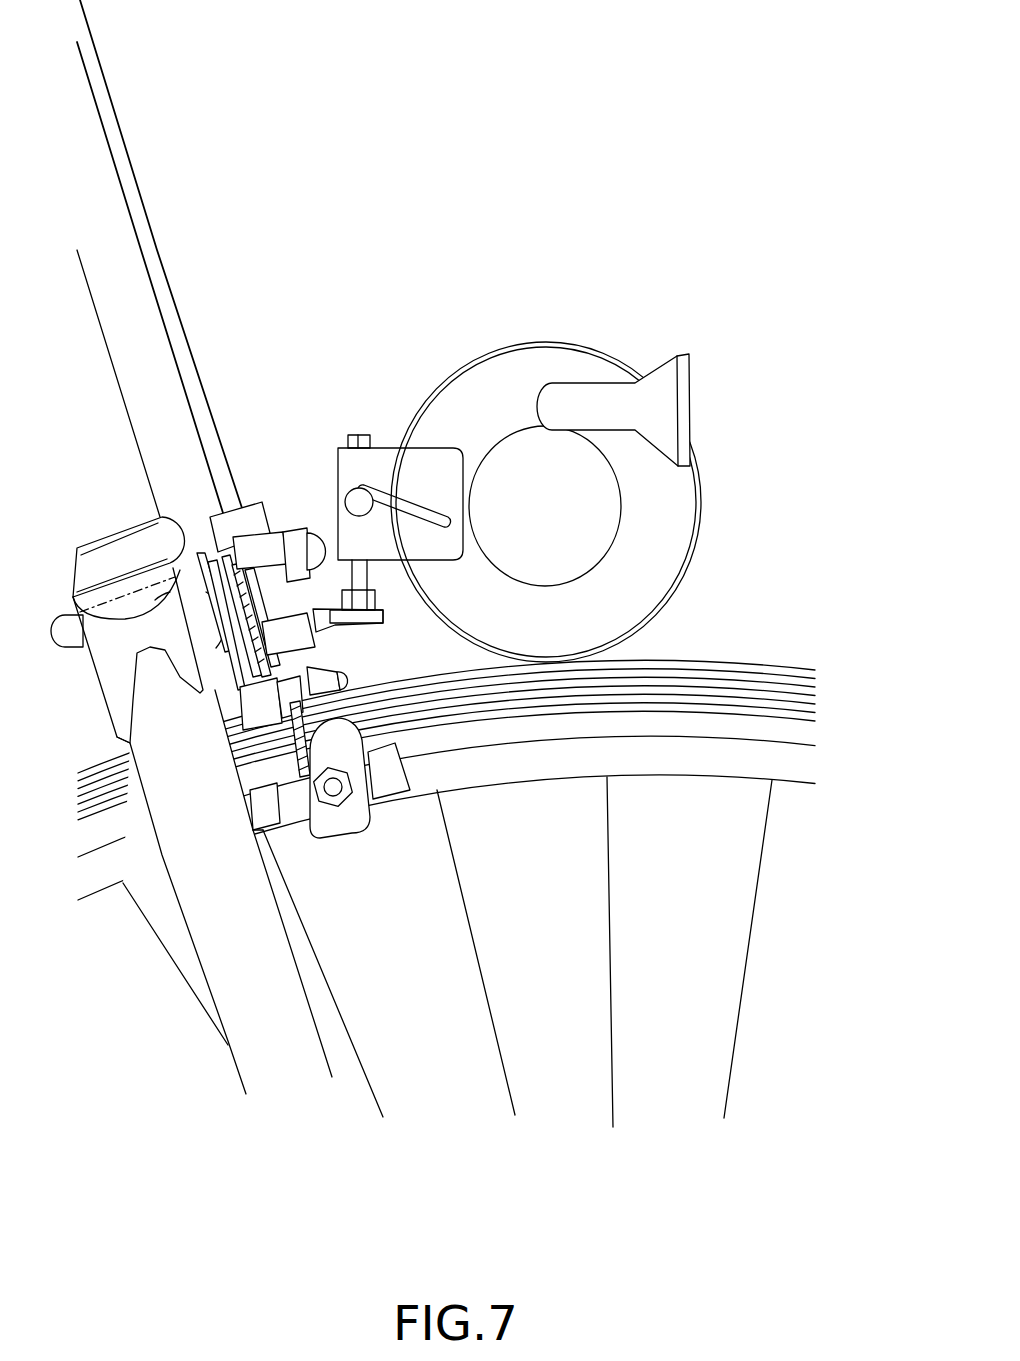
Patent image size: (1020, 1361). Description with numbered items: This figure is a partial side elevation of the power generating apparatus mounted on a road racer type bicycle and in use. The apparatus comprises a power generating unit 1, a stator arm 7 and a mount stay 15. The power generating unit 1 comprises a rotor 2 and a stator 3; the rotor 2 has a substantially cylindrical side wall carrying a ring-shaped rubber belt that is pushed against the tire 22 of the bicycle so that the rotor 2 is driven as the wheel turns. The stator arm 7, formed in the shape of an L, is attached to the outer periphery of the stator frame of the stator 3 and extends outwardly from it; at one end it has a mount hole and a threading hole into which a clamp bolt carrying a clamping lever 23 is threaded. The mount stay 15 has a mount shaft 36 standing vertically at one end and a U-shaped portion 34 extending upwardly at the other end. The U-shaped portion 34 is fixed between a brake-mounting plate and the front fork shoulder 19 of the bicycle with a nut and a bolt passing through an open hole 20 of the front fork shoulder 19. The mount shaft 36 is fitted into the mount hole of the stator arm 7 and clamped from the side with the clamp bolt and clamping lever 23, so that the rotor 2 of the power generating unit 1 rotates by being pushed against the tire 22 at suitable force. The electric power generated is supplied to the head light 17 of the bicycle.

The power generating unit 1 is at (541, 317).
The rotor 2 is at (617, 357).
The stator 3 is at (517, 410).
The stator arm 7 is at (413, 473).
The mount stay 15 is at (323, 607).
The head light 17 is at (661, 351).
The front fork shoulder 19 is at (277, 315).
The open hole 20 is at (143, 600).
The tire 22 is at (685, 673).
The clamping lever 23 is at (449, 288).
The U-shaped portion 34 is at (239, 694).
The mount shaft 36 is at (363, 567).